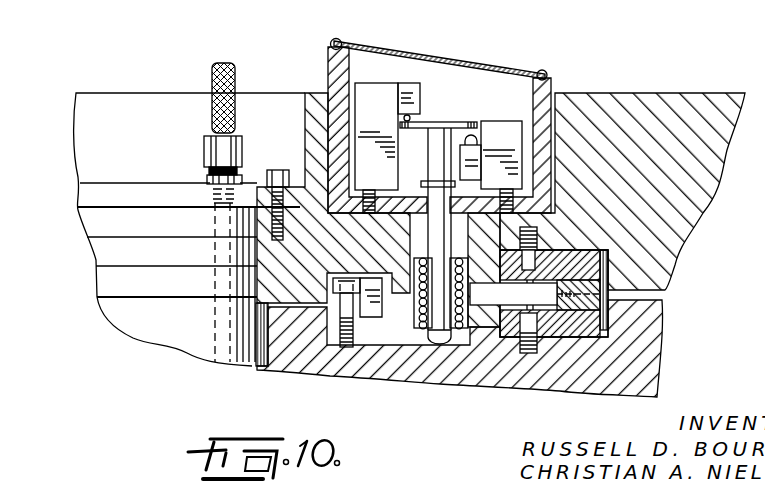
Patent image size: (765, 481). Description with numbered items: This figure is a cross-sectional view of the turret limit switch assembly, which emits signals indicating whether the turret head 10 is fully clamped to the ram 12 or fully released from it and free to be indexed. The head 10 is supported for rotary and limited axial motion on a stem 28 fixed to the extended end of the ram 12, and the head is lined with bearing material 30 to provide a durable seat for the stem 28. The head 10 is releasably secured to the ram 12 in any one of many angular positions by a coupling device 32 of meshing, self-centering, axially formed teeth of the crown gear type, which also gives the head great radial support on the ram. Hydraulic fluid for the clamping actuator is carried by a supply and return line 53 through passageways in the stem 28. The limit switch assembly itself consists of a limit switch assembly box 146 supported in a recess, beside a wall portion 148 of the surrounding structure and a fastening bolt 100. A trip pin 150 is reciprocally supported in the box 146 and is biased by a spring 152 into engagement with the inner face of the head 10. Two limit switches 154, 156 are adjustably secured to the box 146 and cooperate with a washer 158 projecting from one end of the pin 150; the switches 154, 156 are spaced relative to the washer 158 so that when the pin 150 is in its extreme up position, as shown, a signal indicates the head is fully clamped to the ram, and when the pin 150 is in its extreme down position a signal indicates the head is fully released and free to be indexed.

The turret head 10 is at (657, 344).
The ram 12 is at (637, 93).
The stem 28 is at (104, 165).
The bearing material 30 is at (266, 369).
The coupling device 32 is at (558, 343).
The supply and return line 53 is at (214, 76).
The bolt 100 is at (358, 347).
The limit switch assembly box 146 is at (330, 60).
The housing wall 148 is at (330, 96).
The trip pin 150 is at (438, 313).
The spring 152 is at (462, 335).
The limit switch 154 is at (412, 84).
The limit switch 156 is at (475, 157).
The washer 158 is at (425, 122).